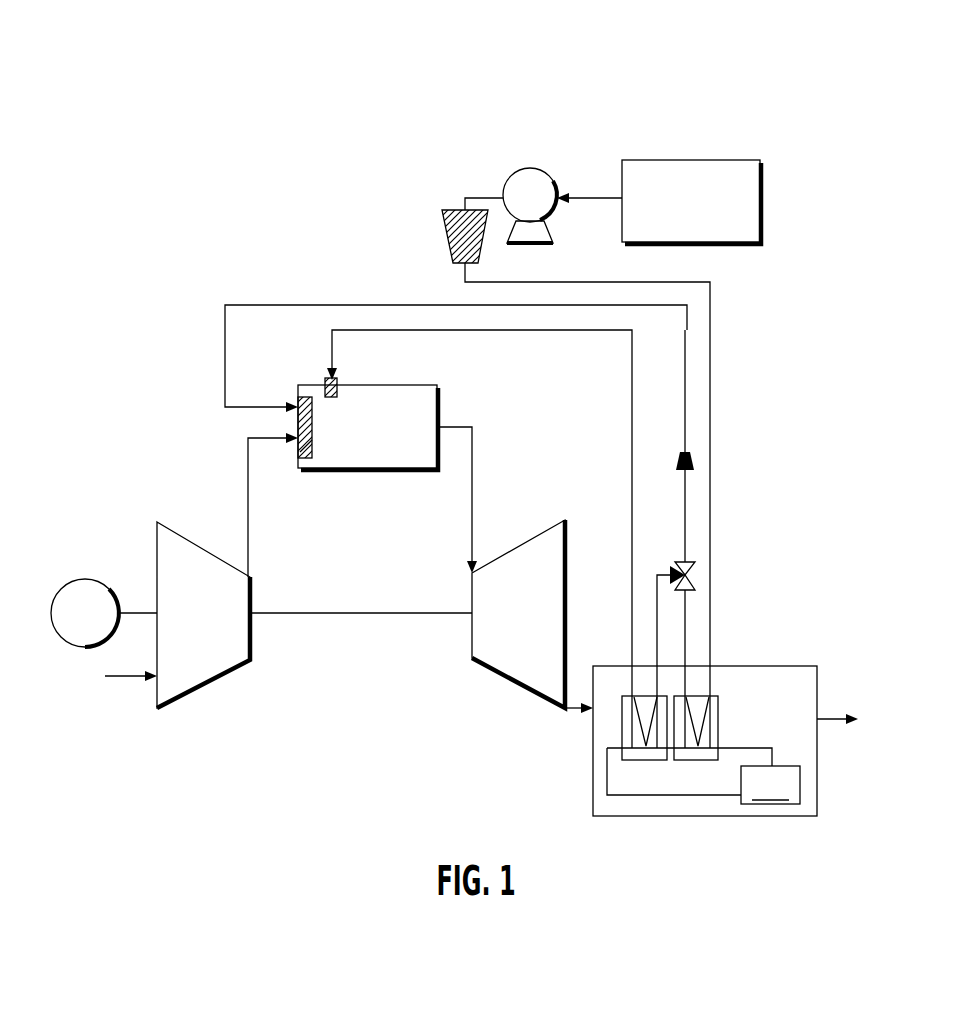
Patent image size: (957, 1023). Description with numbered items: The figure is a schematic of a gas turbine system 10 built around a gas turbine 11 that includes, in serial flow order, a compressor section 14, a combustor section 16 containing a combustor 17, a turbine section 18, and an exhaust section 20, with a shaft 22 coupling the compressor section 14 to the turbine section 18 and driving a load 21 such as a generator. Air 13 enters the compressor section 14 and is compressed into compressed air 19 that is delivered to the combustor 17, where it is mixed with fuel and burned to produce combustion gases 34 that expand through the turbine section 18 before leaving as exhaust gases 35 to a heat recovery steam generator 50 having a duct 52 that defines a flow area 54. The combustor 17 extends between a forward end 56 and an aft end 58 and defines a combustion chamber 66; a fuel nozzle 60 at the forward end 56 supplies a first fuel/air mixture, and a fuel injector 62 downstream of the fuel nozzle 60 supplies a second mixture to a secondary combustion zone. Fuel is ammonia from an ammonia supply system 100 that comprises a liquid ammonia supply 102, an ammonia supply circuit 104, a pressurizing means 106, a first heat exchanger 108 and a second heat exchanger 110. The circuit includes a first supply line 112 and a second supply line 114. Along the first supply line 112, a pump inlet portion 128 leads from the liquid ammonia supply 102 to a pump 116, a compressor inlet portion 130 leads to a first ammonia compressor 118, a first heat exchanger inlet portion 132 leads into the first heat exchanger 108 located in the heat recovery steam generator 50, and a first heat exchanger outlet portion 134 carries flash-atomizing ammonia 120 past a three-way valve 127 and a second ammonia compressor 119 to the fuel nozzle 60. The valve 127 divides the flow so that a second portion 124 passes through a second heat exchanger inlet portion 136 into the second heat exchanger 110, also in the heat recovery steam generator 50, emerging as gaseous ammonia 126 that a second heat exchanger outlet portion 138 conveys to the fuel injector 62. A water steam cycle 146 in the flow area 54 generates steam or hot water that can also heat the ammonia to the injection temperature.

The gas turbine system 10 is at (618, 55).
The gas turbine 11 is at (528, 388).
The air 13 is at (120, 678).
The compressor section 14 is at (200, 692).
The combustor section 16 is at (372, 385).
The combustor 17 is at (368, 427).
The turbine section 18 is at (512, 686).
The compressed air 19 is at (248, 495).
The exhaust section 20 is at (810, 568).
The load 21 is at (90, 578).
The shaft 22 is at (350, 613).
The combustion gases 34 is at (472, 490).
The exhaust gases 35 is at (570, 712).
The heat recovery steam generator 50 is at (683, 816).
The duct 52 is at (757, 666).
The flow area 54 is at (727, 808).
The forward end 56 is at (298, 460).
The aft end 58 is at (437, 460).
The fuel nozzle 60 is at (312, 450).
The fuel injector 62 is at (326, 380).
The combustion chamber 66 is at (378, 465).
The ammonia supply system 100 is at (752, 108).
The liquid ammonia supply 102 is at (680, 160).
The ammonia supply circuit 104 is at (757, 308).
The pressurizing means 106 is at (486, 125).
The first heat exchanger 108 is at (720, 730).
The second heat exchanger 110 is at (620, 722).
The first supply line 112 is at (712, 435).
The second supply line 114 is at (657, 590).
The pump 116 is at (522, 168).
The first ammonia compressor 118 is at (445, 228).
The second ammonia compressor 119 is at (677, 466).
The flash-atomizing ammonia 120 is at (688, 605).
The second portion 124 is at (633, 490).
The gaseous ammonia 126 is at (482, 425).
The valve 127 is at (695, 565).
The pump inlet portion 128 is at (583, 195).
The compressor inlet portion 130 is at (488, 197).
The first heat exchanger inlet portion 132 is at (613, 282).
The first heat exchanger outlet portion 134 is at (322, 305).
The second heat exchanger inlet portion 136 is at (657, 650).
The second heat exchanger outlet portion 138 is at (632, 605).
The water steam cycle 146 is at (770, 785).